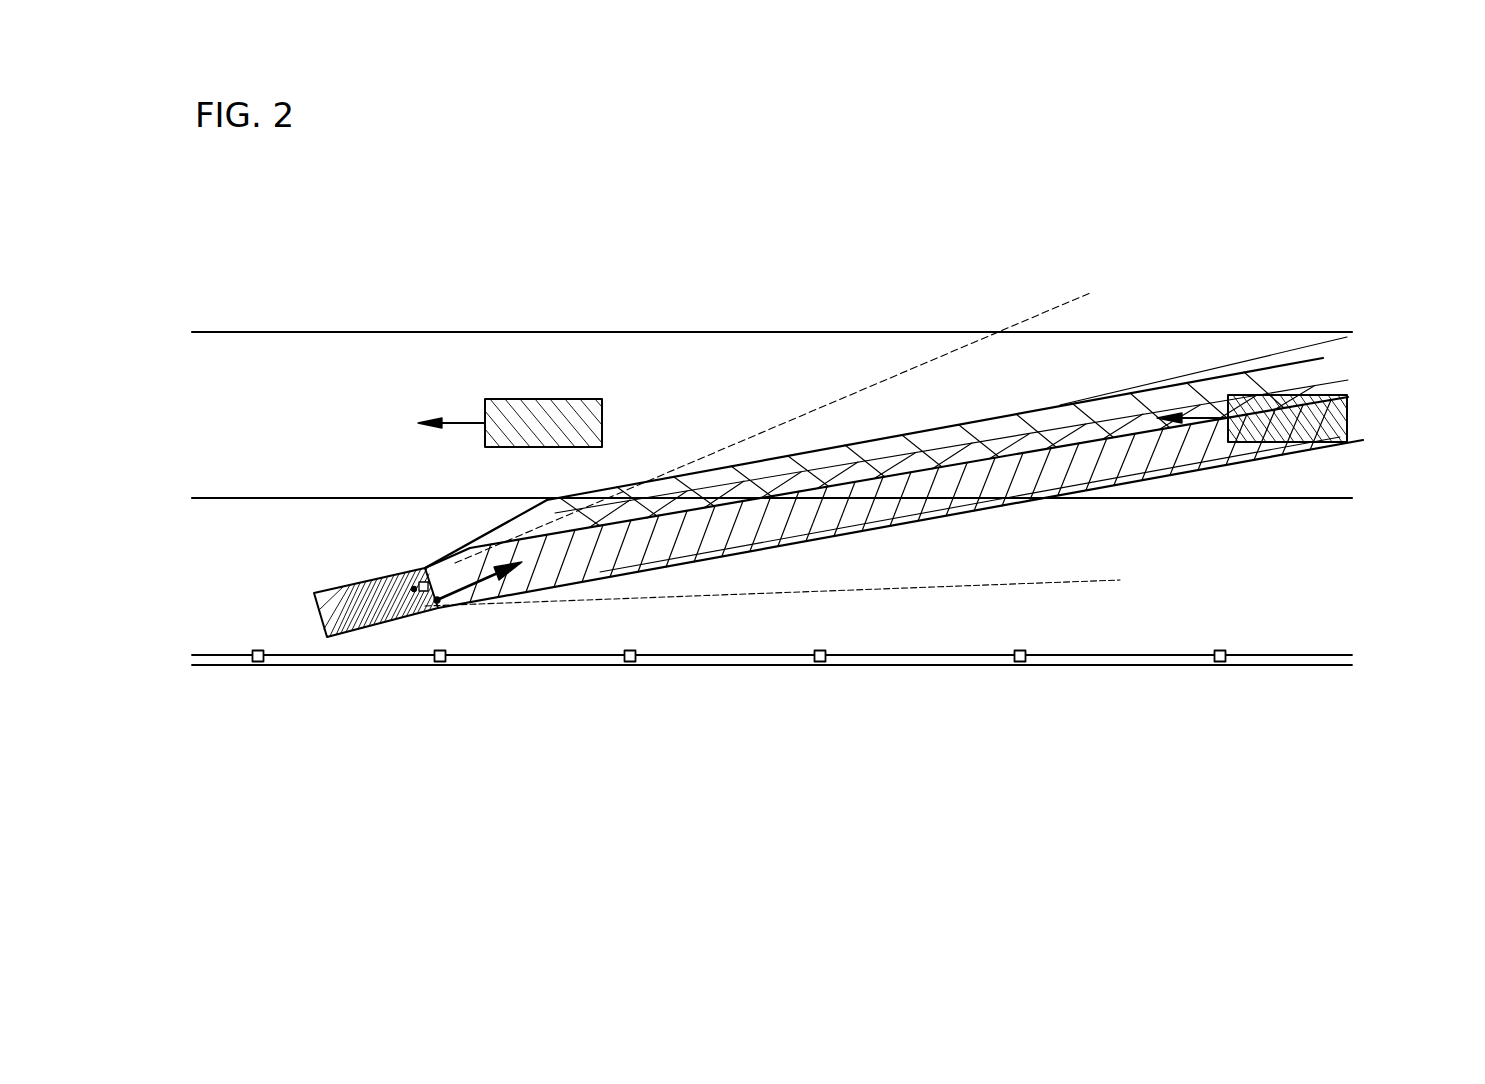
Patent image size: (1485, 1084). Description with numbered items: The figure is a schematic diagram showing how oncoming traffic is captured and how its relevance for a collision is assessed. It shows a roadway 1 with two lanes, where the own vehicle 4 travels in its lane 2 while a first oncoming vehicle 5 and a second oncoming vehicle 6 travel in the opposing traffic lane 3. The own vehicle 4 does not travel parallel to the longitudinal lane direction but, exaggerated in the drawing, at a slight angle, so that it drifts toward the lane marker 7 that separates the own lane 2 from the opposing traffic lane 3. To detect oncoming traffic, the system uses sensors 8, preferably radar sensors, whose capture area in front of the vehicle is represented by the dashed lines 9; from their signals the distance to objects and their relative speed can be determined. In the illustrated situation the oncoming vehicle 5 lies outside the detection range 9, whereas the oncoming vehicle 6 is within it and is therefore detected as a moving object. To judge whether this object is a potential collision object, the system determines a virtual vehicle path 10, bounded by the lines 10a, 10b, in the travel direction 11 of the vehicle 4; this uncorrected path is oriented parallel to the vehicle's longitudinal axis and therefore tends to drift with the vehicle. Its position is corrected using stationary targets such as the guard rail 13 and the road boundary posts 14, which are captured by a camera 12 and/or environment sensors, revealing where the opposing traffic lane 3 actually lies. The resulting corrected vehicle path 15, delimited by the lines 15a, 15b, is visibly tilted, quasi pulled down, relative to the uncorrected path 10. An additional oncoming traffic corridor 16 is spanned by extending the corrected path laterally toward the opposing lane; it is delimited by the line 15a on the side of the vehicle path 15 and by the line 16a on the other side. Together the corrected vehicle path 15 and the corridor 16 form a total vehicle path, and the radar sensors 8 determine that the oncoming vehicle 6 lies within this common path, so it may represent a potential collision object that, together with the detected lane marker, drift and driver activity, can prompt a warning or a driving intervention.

The roadway 1 is at (332, 266).
The lane 2 is at (311, 549).
The opposing traffic lane 3 is at (378, 377).
The own vehicle 4 is at (374, 630).
The first oncoming vehicle 5 is at (560, 398).
The second oncoming vehicle 6 is at (1350, 396).
The lane marker 7 is at (342, 497).
The sensors 8 is at (412, 586).
The dashed lines 9 is at (845, 394).
The virtual vehicle path 10 is at (1148, 404).
The line 10a is at (876, 443).
The line 10b is at (878, 529).
The travel direction 11 is at (465, 602).
The camera 12 is at (403, 583).
The guard rail 13 is at (740, 666).
The road boundary posts 14 is at (630, 664).
The corrected vehicle path 15 is at (1228, 456).
The line 15a is at (980, 457).
The line 15b is at (1000, 506).
The oncoming traffic corridor 16 is at (897, 462).
The line 16a is at (940, 425).